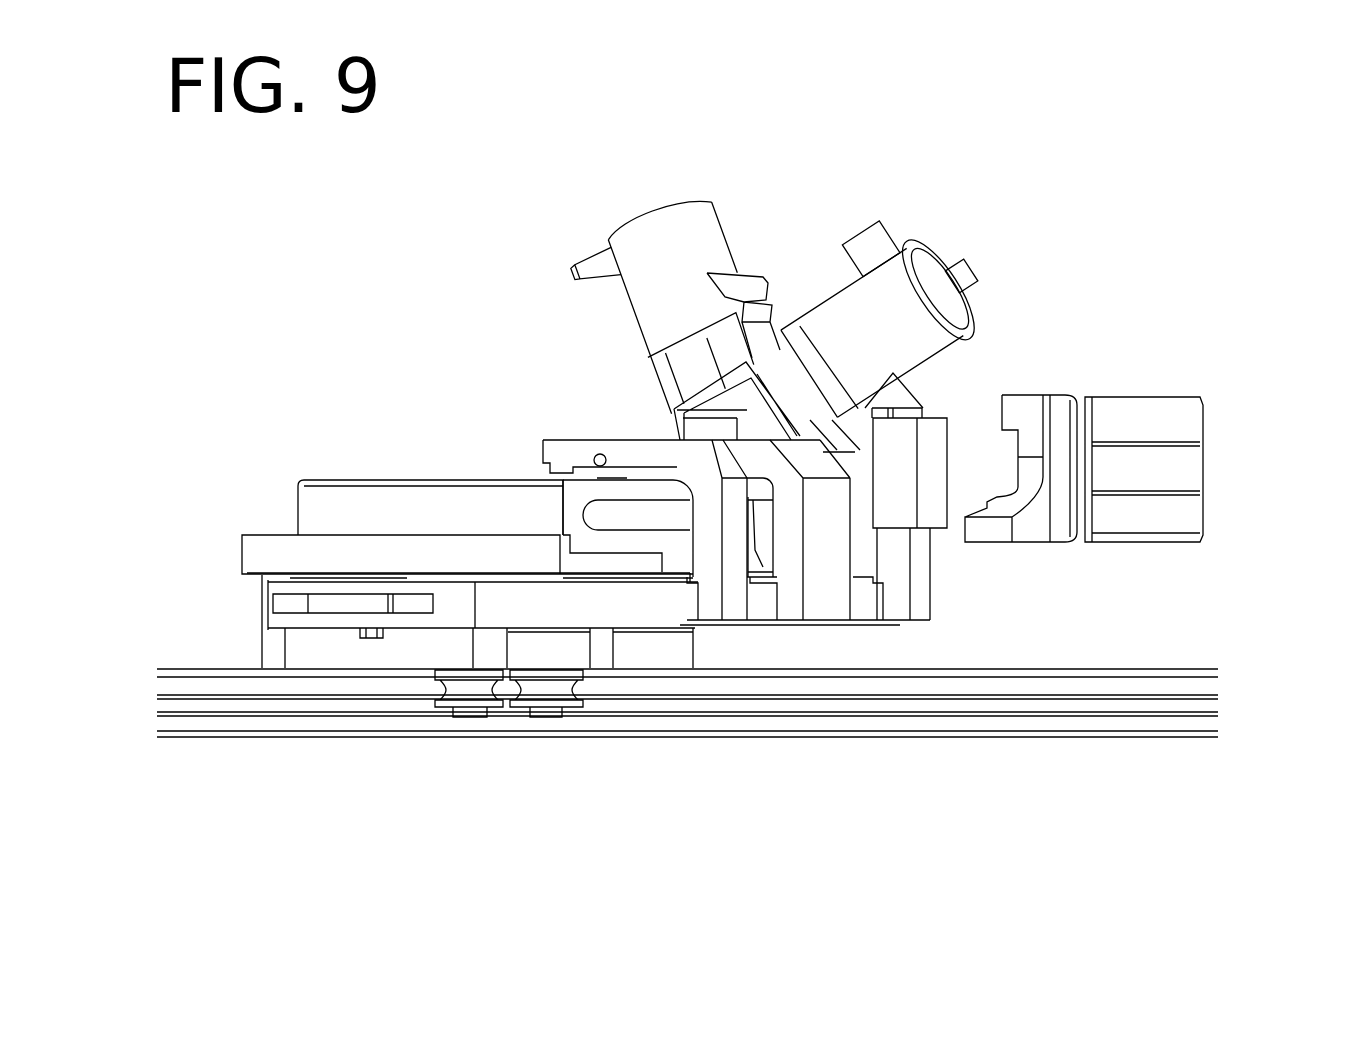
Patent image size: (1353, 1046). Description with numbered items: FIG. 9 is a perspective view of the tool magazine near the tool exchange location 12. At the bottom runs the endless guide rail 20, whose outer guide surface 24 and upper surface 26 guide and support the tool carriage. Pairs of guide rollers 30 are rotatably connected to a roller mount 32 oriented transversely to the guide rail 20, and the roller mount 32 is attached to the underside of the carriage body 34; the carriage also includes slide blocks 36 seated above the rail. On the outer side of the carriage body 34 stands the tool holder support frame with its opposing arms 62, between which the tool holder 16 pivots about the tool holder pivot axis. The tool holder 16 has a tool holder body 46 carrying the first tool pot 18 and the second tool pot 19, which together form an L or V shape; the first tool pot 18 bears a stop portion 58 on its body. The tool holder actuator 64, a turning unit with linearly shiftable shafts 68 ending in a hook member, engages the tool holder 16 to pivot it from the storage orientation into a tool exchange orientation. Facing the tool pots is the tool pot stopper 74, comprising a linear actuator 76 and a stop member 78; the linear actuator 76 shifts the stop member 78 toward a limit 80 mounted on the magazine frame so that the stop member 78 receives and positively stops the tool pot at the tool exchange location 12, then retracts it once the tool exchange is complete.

The tool exchange location 12 is at (867, 460).
The tool holder 16 is at (782, 292).
The first tool pot 18 is at (918, 270).
The second tool pot 19 is at (668, 255).
The guide rail 20 is at (736, 692).
The outer guide surface 24 is at (1117, 717).
The upper surface 26 is at (1145, 667).
The guide rollers 30 is at (493, 688).
The roller mount 32 is at (325, 650).
The carriage body 34 is at (455, 605).
The slide block 36 is at (578, 657).
The tool holder body 46 is at (663, 408).
The stop portion 58 is at (927, 410).
The arms 62 is at (623, 452).
The tool holder actuator 64 is at (348, 469).
The linearly shiftable shafts 68 is at (595, 515).
The tool pot stopper 74 is at (1182, 429).
The linear actuator 76 is at (1143, 412).
The stop member 78 is at (1043, 528).
The limit 80 is at (903, 507).